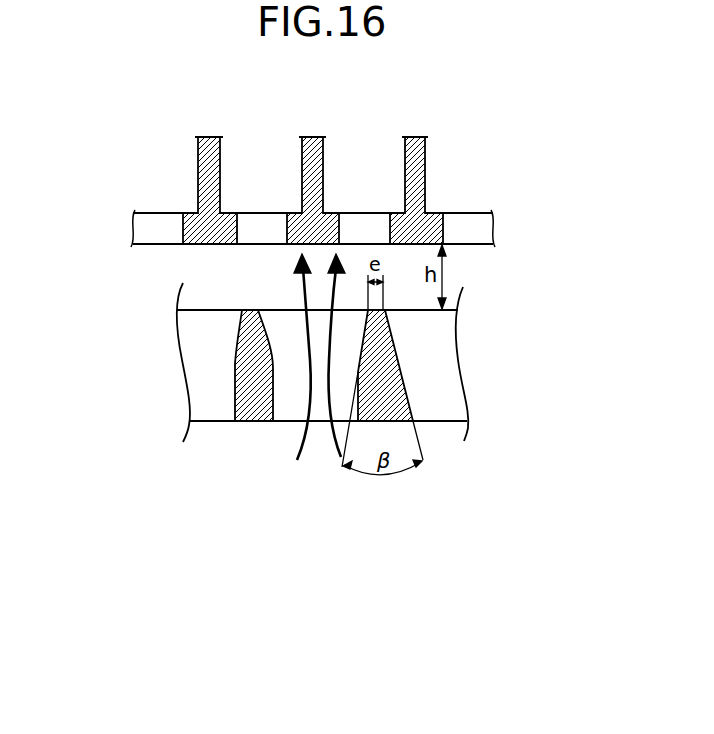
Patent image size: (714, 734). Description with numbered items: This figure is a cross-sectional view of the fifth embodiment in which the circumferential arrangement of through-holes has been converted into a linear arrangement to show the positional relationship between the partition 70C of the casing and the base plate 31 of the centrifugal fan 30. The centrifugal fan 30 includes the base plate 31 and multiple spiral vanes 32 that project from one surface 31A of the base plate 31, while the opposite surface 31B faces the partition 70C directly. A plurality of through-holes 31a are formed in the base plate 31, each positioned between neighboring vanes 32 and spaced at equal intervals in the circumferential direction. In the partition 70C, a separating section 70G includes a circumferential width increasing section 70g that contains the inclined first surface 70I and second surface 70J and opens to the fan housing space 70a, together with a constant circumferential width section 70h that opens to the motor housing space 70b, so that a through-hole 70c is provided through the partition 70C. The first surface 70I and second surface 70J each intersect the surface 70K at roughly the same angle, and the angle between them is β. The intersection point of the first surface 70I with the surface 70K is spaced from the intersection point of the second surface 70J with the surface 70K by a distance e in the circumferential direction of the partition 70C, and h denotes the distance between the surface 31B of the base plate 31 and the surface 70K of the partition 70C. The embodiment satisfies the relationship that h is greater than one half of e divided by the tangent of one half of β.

The centrifugal fan 30 is at (493, 209).
The base plate 31 is at (457, 211).
The through-hole 31a is at (377, 222).
The one surface of the base plate 31A is at (470, 211).
The opposite surface of the base plate 31B is at (473, 245).
The spiral vane 32 is at (427, 147).
The fan housing space 70a is at (220, 292).
The motor housing space 70b is at (210, 443).
The through-hole 70c is at (288, 393).
The circumferential width increasing section 70g is at (363, 330).
The separating section 70G is at (256, 421).
The constant circumferential width section 70h is at (357, 420).
The first surface 70I is at (360, 345).
The second surface 70J is at (398, 334).
The surface of the partition 70K is at (453, 307).
The partition 70C is at (447, 382).